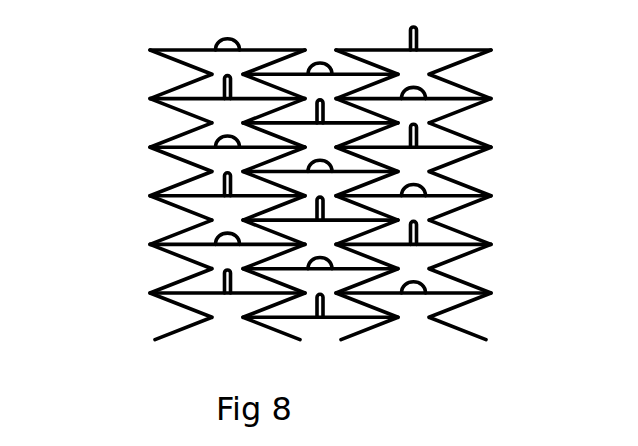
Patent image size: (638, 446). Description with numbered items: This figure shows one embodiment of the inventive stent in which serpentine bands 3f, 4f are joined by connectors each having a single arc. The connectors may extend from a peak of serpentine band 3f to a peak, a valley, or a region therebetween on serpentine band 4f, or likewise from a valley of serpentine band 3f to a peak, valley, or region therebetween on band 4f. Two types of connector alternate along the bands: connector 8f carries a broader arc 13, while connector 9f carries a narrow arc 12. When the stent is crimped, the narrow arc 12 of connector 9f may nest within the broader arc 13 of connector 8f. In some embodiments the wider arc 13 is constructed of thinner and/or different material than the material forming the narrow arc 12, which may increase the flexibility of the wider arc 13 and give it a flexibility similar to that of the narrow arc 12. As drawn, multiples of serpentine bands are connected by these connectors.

The serpentine band 3f is at (181, 358).
The serpentine band 4f is at (287, 346).
The connector 8f is at (215, 165).
The connector 9f is at (220, 210).
The narrow arc 12 is at (211, 195).
The broader arc 13 is at (210, 133).